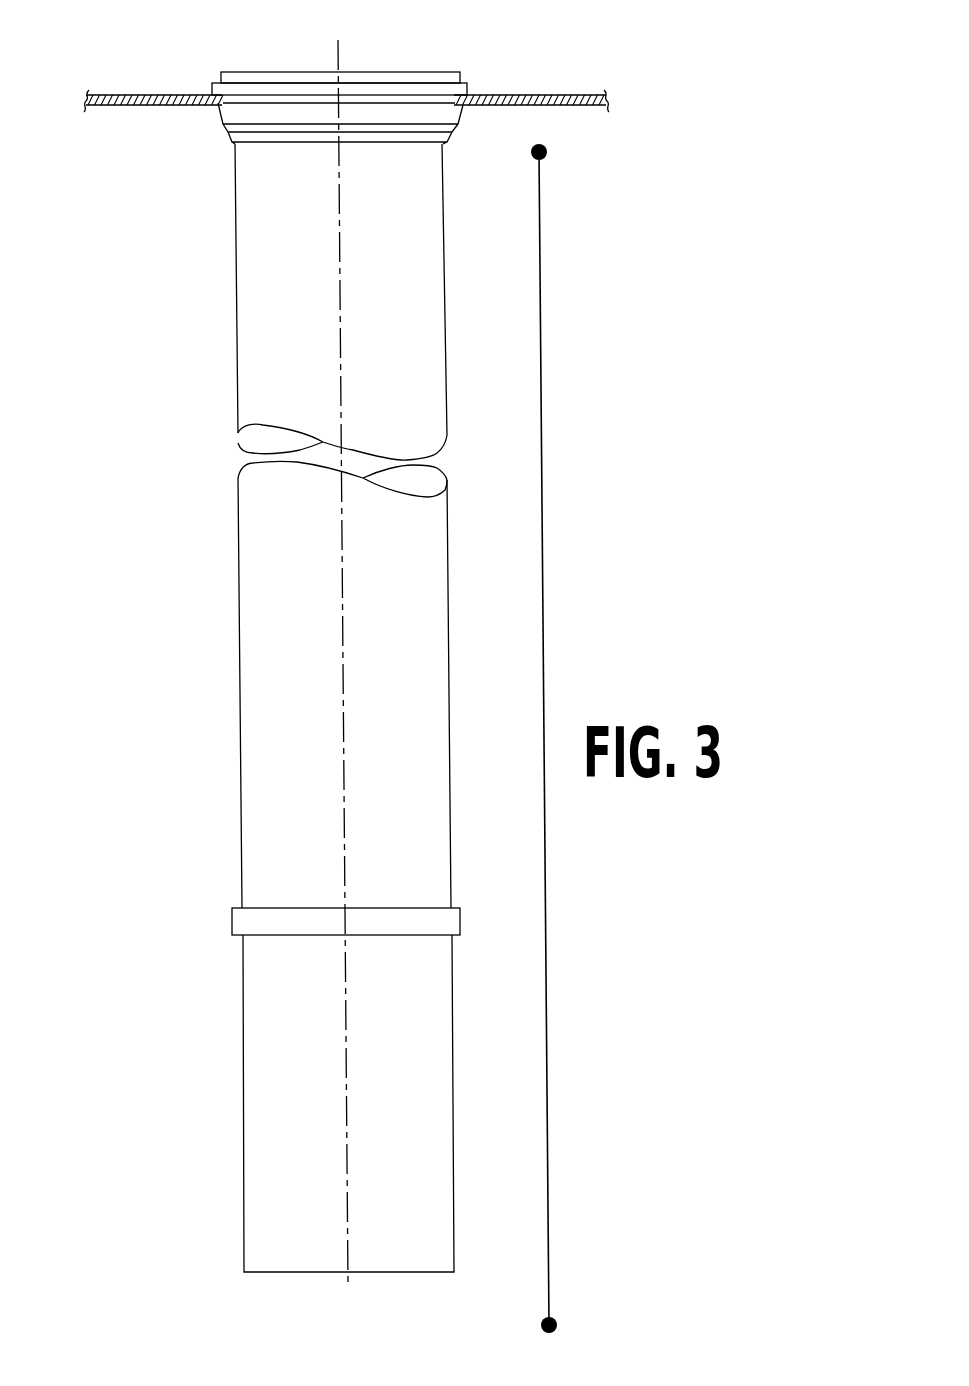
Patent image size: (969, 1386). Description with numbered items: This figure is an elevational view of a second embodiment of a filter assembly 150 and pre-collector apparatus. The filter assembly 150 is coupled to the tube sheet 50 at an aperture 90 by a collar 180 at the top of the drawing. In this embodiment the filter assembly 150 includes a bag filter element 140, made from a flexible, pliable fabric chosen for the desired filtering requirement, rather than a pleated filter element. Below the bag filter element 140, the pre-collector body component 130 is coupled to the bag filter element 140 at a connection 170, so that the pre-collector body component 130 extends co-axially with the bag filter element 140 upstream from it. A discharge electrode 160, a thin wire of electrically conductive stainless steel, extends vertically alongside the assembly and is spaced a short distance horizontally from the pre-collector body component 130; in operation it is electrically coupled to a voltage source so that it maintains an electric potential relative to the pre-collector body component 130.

The tube sheet 50 is at (548, 95).
The aperture 90 is at (227, 100).
The pre-collector body component 130 is at (453, 1033).
The bag filter element 140 is at (449, 642).
The filter assembly 150 is at (195, 688).
The discharge electrode 160 is at (548, 1100).
The connection 170 is at (232, 924).
The collar 180 is at (470, 65).